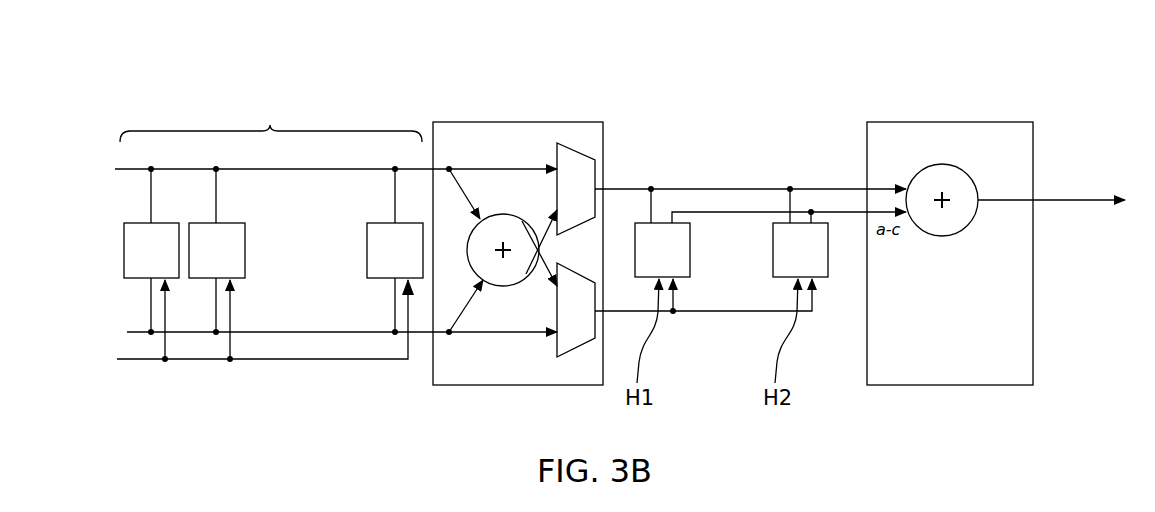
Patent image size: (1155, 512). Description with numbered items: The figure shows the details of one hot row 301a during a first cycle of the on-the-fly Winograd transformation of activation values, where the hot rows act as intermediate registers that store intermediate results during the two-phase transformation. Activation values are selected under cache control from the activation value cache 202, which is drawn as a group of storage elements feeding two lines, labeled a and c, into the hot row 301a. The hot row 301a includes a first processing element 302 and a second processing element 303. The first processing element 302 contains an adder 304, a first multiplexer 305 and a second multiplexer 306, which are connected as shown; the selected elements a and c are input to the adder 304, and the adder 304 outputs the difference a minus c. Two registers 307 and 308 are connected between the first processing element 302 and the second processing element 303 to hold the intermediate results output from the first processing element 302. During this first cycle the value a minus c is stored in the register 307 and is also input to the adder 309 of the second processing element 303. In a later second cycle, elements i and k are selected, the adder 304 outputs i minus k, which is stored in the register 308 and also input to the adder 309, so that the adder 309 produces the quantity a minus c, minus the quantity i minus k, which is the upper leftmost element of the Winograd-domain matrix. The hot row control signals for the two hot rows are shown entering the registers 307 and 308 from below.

The hot row 301a is at (138, 102).
The activation value cache 202 is at (271, 228).
The first processing element 302 is at (518, 225).
The second processing element 303 is at (996, 225).
The adder 304 is at (500, 213).
The first multiplexer 305 is at (565, 163).
The second multiplexer 306 is at (573, 337).
The register 307 is at (690, 250).
The register 308 is at (773, 268).
The adder 309 is at (925, 168).